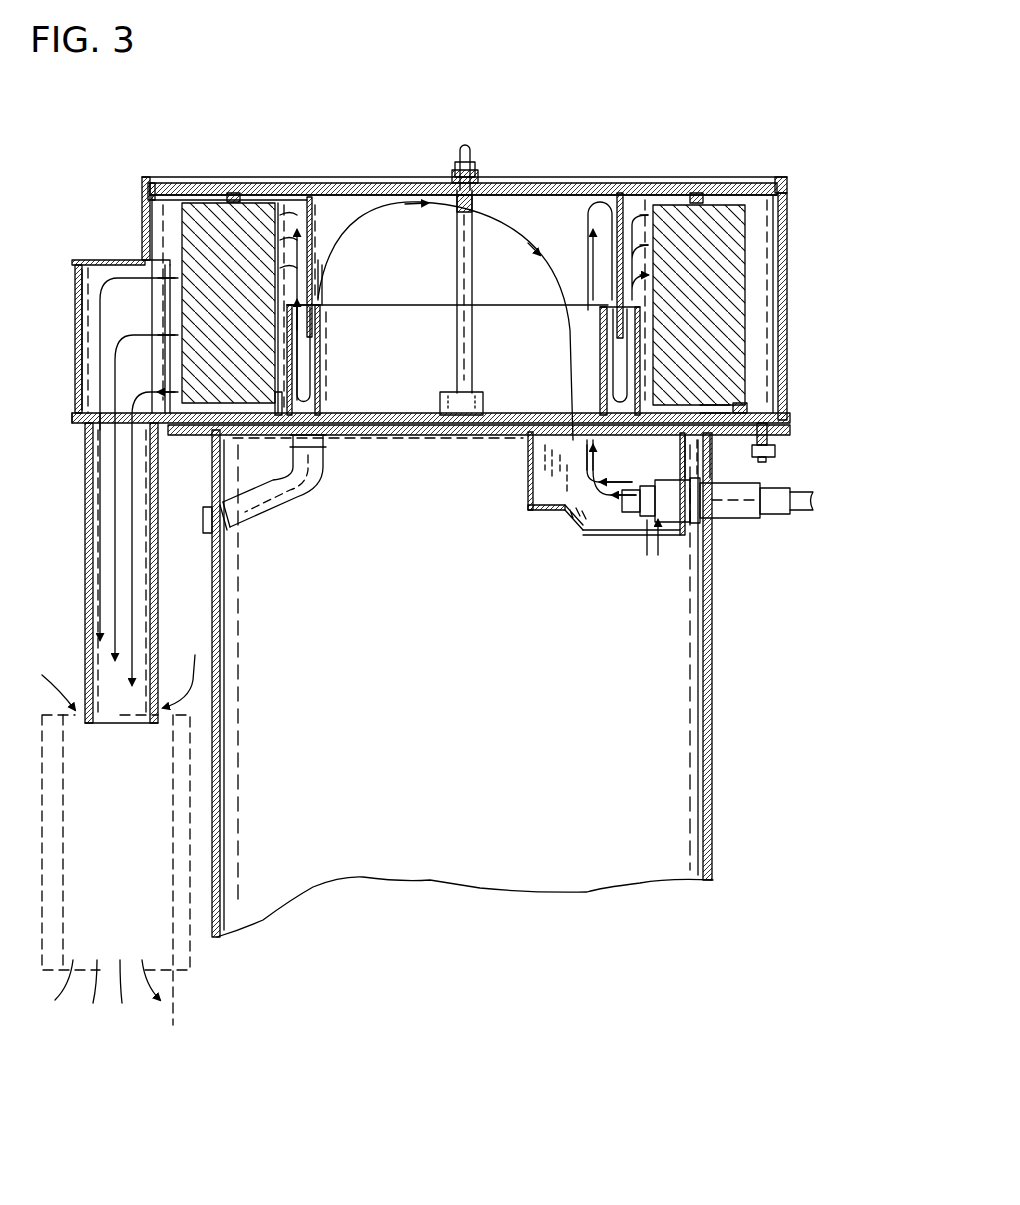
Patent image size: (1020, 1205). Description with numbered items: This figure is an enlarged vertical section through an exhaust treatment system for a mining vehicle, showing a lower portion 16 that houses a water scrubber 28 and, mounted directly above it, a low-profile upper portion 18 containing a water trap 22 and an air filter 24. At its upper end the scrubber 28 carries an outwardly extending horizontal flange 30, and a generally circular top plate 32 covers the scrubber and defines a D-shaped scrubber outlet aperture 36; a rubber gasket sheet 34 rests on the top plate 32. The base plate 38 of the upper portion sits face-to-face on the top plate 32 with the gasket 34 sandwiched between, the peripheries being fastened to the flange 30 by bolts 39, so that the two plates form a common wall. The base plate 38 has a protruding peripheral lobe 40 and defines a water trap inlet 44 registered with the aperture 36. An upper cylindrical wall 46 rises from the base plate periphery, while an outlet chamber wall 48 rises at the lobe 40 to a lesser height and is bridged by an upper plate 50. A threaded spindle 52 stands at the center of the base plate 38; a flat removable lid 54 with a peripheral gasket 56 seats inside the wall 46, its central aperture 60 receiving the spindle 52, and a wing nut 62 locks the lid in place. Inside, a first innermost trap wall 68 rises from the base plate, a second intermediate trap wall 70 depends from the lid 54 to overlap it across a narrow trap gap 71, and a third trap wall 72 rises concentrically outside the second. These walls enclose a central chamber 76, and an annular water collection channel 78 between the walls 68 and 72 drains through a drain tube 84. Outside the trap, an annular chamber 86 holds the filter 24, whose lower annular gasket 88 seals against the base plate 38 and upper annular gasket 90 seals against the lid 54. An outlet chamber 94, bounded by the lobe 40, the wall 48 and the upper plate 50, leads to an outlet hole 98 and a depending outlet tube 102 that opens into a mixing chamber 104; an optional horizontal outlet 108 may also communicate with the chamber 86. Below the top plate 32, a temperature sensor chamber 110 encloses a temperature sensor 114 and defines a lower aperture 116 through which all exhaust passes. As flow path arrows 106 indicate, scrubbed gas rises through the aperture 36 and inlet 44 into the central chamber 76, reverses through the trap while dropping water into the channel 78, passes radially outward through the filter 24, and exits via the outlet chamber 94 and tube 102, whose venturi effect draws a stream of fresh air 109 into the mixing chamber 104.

The lower portion 16 is at (812, 890).
The upper portion 18 is at (812, 177).
The water trap 22 is at (297, 445).
The air filter 24 is at (244, 243).
The water scrubber 28 is at (713, 683).
The horizontal flange 30 is at (183, 438).
The top plate 32 is at (405, 440).
The rubber gasket sheet 34 is at (350, 440).
The scrubber outlet aperture 36 is at (540, 435).
The base plate 38 is at (422, 415).
The bolts 39 is at (770, 455).
The peripheral lobe 40 is at (78, 415).
The water trap inlet 44 is at (540, 440).
The upper cylindrical wall 46 is at (787, 282).
The outlet chamber wall 48 is at (73, 340).
The upper plate 50 is at (112, 260).
The threaded spindle 52 is at (470, 268).
The removable lid 54 is at (563, 187).
The peripheral gasket 56 is at (780, 178).
The central aperture 60 is at (467, 198).
The wing nut 62 is at (462, 145).
The first innermost trap wall 68 is at (608, 350).
The second intermediate trap wall 70 is at (318, 245).
The trap gap 71 is at (318, 298).
The third trap wall 72 is at (287, 357).
The central chamber 76 is at (432, 240).
The water collection channel 78 is at (310, 407).
The drain tube 84 is at (277, 513).
The annular chamber 86 is at (158, 228).
The lower annular gasket 88 is at (743, 405).
The upper annular gasket 90 is at (687, 200).
The outlet chamber 94 is at (92, 285).
The outlet hole 98 is at (97, 413).
The outlet tube 102 is at (85, 652).
The mixing chamber 104 is at (134, 828).
The flow path arrows 106 is at (562, 298).
The horizontal outlet 108 is at (52, 677).
The stream of fresh air 109 is at (185, 667).
The temperature sensor chamber 110 is at (563, 520).
The temperature sensor 114 is at (647, 512).
The lower aperture 116 is at (618, 510).